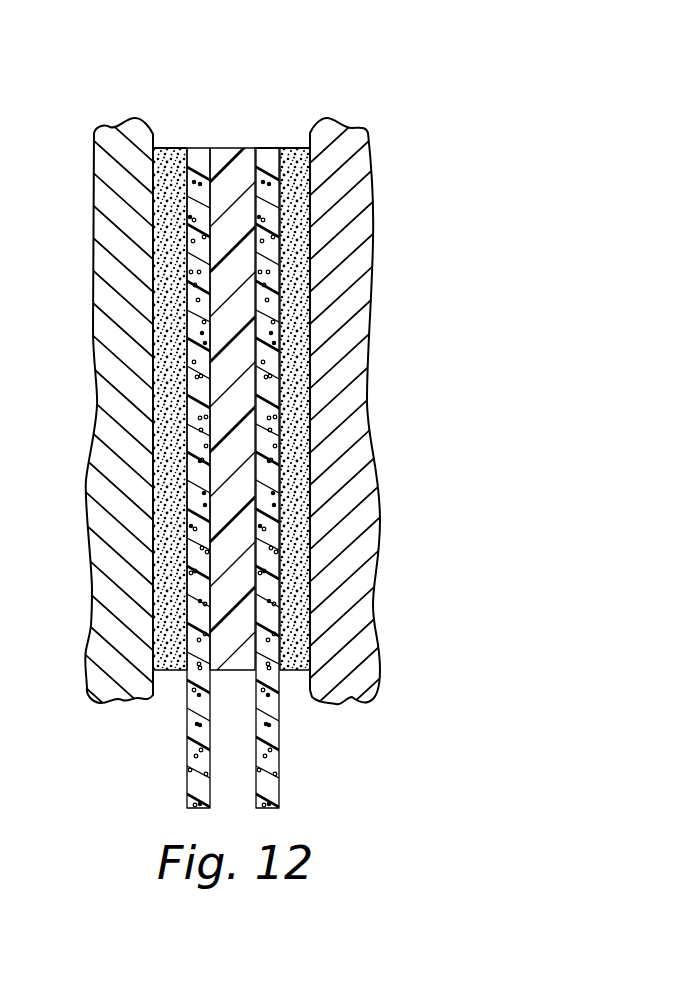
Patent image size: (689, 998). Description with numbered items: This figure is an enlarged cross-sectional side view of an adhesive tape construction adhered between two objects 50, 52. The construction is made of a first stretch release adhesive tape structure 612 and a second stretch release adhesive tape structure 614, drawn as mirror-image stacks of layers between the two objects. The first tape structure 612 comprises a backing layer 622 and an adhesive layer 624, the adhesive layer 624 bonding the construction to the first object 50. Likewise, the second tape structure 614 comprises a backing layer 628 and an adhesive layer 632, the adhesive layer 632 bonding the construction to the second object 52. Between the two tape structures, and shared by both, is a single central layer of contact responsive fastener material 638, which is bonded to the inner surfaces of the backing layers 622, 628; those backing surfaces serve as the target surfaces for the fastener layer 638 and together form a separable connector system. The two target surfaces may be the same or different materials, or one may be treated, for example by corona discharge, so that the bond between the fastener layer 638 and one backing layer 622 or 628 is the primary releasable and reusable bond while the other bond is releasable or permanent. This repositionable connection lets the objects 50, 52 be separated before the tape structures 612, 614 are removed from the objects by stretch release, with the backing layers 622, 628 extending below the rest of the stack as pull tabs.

The object 50 is at (100, 454).
The object 52 is at (365, 455).
The first stretch release adhesive tape structure 612 is at (176, 115).
The second stretch release adhesive tape structure 614 is at (294, 112).
The backing layer 622 is at (188, 767).
The adhesive layer 624 is at (172, 148).
The backing layer 628 is at (280, 779).
The adhesive layer 632 is at (293, 147).
The contact responsive fastener material layer 638 is at (237, 134).